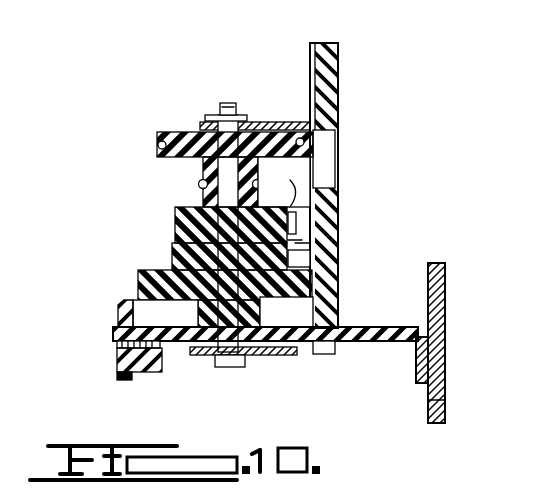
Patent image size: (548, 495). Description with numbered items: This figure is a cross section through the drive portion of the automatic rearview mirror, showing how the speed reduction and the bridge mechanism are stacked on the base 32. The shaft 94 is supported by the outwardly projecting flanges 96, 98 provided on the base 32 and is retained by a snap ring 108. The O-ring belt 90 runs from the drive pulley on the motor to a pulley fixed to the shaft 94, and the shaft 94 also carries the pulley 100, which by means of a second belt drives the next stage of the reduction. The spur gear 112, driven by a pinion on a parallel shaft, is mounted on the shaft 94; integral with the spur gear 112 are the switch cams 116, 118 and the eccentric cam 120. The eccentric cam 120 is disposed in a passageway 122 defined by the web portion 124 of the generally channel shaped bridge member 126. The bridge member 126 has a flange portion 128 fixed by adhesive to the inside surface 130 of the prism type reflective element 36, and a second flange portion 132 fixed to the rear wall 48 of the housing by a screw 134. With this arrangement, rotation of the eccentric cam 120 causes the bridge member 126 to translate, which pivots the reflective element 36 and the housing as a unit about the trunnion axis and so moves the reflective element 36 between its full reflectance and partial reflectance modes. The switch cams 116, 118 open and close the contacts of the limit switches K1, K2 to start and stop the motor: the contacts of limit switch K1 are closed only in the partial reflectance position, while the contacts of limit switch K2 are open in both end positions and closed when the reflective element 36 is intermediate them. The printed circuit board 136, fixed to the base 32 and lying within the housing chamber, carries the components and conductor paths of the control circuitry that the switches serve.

The base 32 is at (309, 63).
The prism type reflective element 36 is at (446, 302).
The rear wall 48 is at (117, 312).
The O-ring belt 90 is at (157, 145).
The shaft 94 is at (228, 104).
The flange 96 is at (277, 122).
The flange 98 is at (279, 356).
The pulley 100 is at (198, 186).
The snap ring 108 is at (207, 356).
The spur gear 112 is at (312, 274).
The switch cam 116 is at (177, 218).
The switch cam 118 is at (172, 255).
The eccentric cam 120 is at (197, 312).
The passageway 122 is at (288, 313).
The web portion 124 is at (366, 342).
The bridge member 126 is at (379, 324).
The flange portion 128 is at (425, 356).
The inside surface 130 is at (432, 408).
The flange portion 132 is at (150, 373).
The screw 134 is at (116, 344).
The printed circuit board 136 is at (338, 72).
The limit switch K1 is at (284, 182).
The limit switch K2 is at (314, 250).